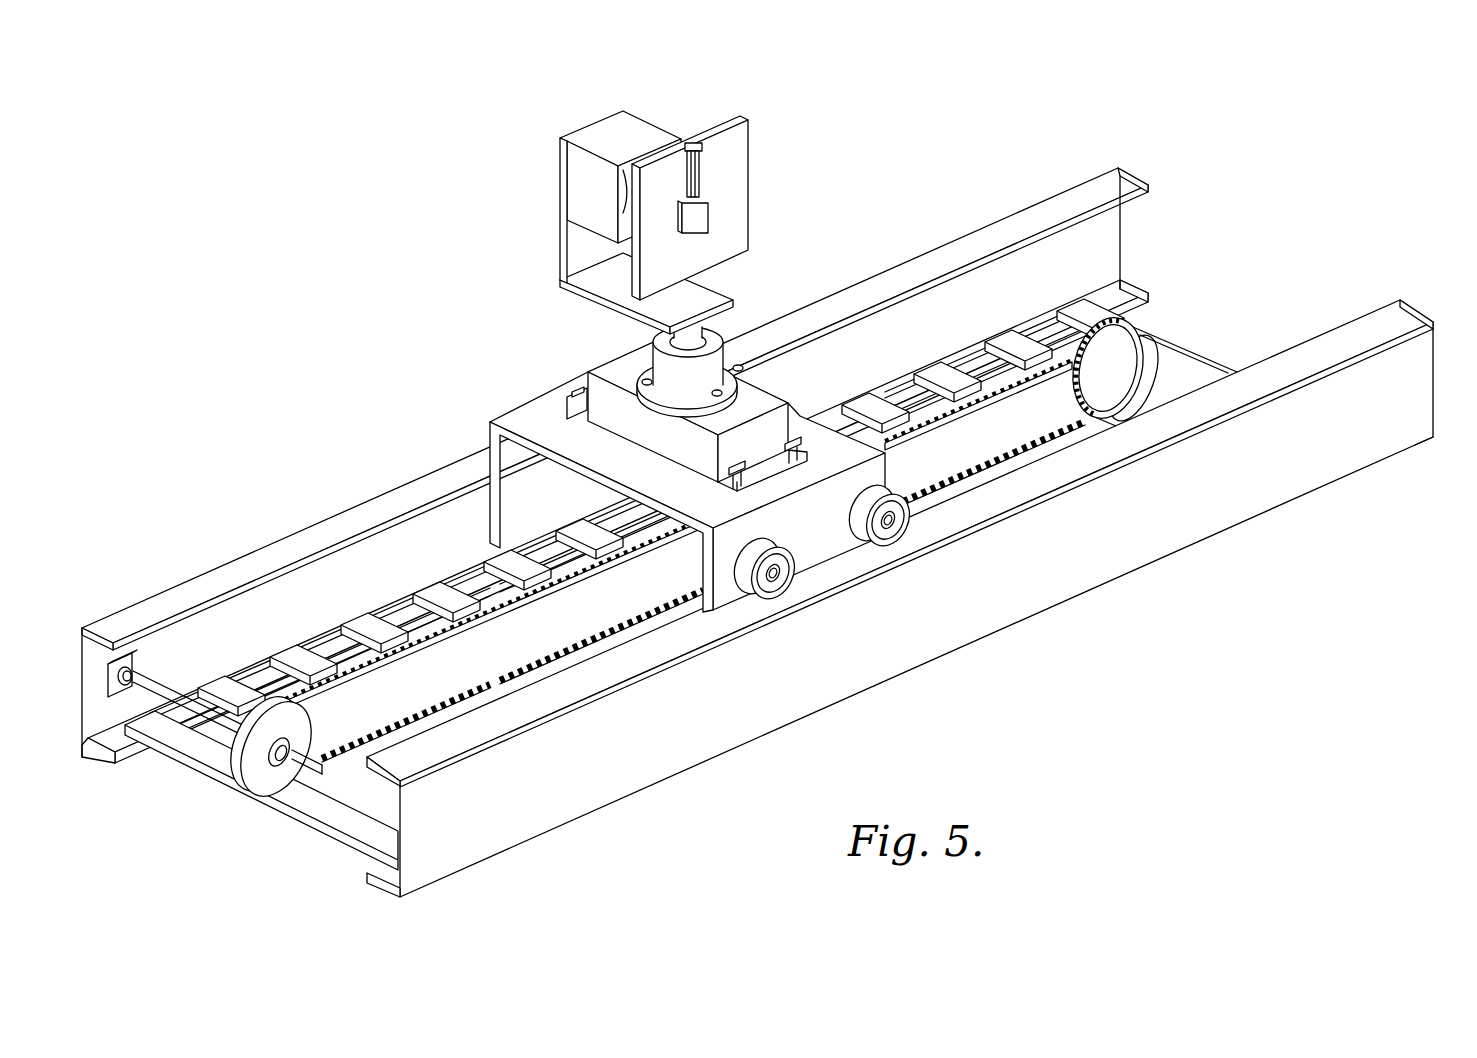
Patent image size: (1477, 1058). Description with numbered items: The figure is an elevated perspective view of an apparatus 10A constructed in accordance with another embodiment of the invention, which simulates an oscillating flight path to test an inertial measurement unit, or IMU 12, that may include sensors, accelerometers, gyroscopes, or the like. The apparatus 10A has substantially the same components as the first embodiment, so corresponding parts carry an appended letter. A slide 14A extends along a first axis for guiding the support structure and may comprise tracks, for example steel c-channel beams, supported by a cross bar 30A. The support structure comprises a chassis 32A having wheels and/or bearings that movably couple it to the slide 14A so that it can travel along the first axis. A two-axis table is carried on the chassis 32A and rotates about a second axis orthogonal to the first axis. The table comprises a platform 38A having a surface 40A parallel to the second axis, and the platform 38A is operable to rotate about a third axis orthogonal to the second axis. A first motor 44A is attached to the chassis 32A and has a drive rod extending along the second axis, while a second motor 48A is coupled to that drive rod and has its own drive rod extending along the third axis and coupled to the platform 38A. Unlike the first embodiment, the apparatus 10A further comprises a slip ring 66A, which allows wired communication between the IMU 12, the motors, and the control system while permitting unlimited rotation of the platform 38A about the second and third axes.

The apparatus 10A is at (770, 477).
The inertial measurement unit (IMU) 12 is at (703, 216).
The slide 14A is at (1162, 164).
The cross bar 30A is at (1174, 340).
The chassis 32A is at (651, 466).
The platform 38A is at (716, 178).
The surface 40A is at (676, 262).
The first motor 44A is at (610, 367).
The second motor 48A is at (605, 135).
The slip ring 66A is at (708, 372).